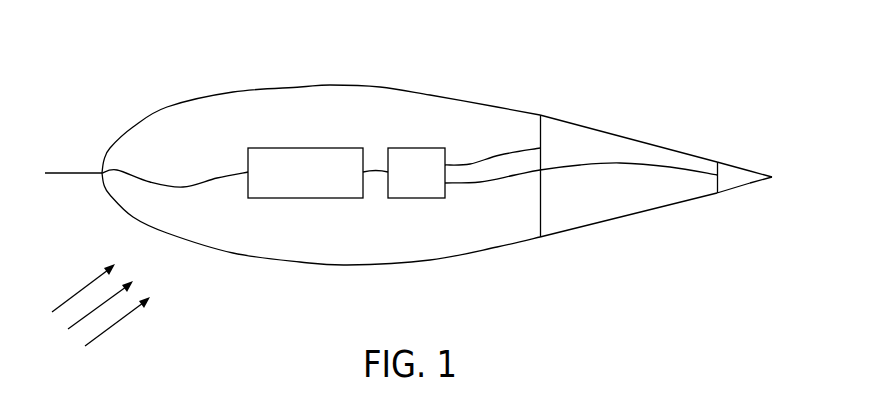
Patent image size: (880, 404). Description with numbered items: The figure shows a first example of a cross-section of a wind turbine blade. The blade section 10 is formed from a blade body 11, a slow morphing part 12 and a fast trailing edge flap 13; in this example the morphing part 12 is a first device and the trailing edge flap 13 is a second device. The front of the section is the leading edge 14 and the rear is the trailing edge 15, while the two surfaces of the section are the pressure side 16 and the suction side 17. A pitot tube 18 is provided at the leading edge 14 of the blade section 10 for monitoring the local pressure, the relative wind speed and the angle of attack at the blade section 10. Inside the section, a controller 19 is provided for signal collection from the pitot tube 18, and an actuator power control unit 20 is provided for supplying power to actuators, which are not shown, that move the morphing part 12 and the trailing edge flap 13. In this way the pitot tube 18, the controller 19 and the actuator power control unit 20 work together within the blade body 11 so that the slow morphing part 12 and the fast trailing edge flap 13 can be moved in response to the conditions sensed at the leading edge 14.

The blade section 10 is at (662, 80).
The blade body 11 is at (420, 105).
The slow morphing part 12 is at (600, 142).
The fast trailing edge flap 13 is at (733, 177).
The leading edge 14 is at (103, 192).
The trailing edge 15 is at (775, 175).
The pressure side 16 is at (493, 247).
The suction side 17 is at (308, 85).
The pitot tube 18 is at (72, 172).
The controller 19 is at (279, 186).
The actuator power control unit 20 is at (417, 187).